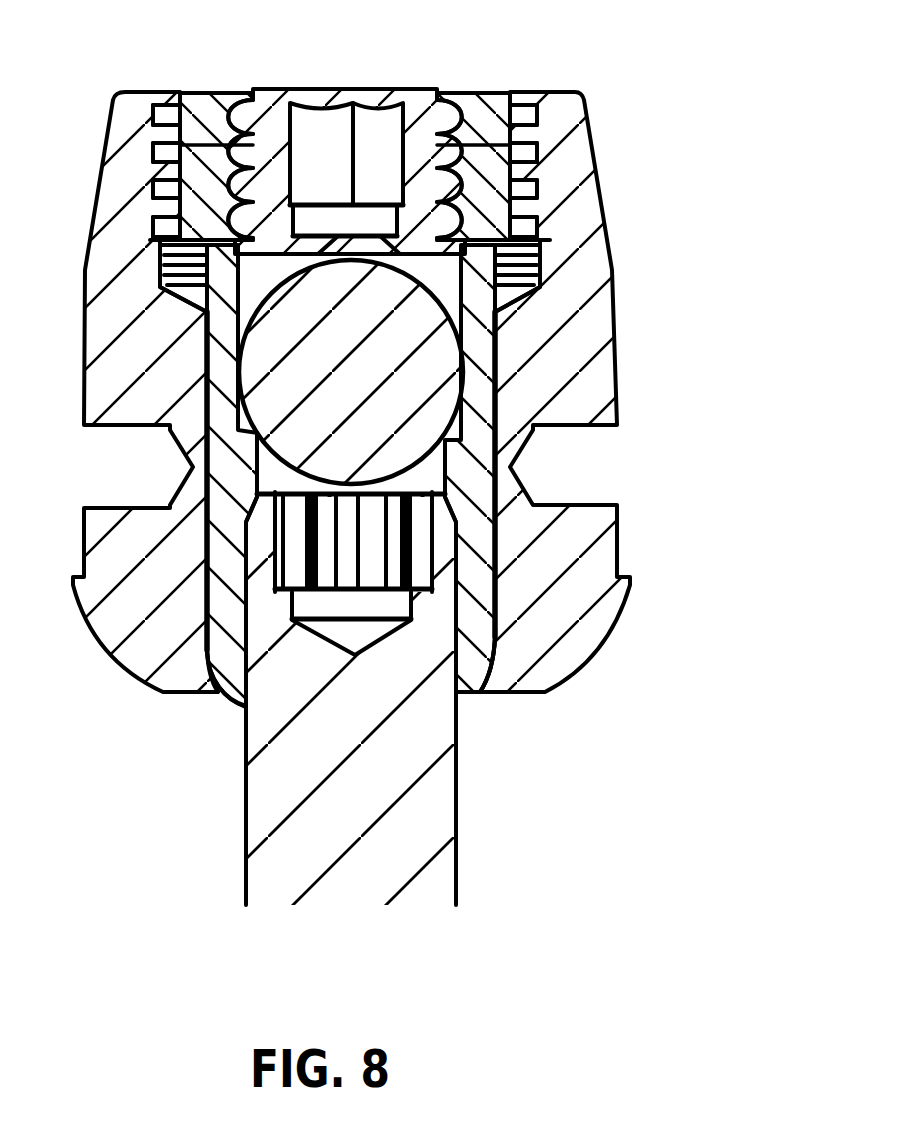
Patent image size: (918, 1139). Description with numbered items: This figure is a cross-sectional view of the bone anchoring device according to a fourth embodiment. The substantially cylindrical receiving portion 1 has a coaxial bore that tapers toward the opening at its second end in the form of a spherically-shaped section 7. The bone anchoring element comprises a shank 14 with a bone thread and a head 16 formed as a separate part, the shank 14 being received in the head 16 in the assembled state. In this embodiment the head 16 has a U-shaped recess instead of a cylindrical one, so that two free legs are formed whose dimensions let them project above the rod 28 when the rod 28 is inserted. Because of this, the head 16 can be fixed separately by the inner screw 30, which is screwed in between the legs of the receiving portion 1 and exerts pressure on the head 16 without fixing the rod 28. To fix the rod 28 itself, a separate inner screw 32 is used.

The receiving portion 1 is at (600, 378).
The spherically-shaped section 7 is at (497, 643).
The shank 14 is at (420, 822).
The head 16 is at (480, 580).
The rod 28 is at (437, 363).
The inner screw 30 is at (482, 110).
The separate inner screw 32 is at (273, 128).